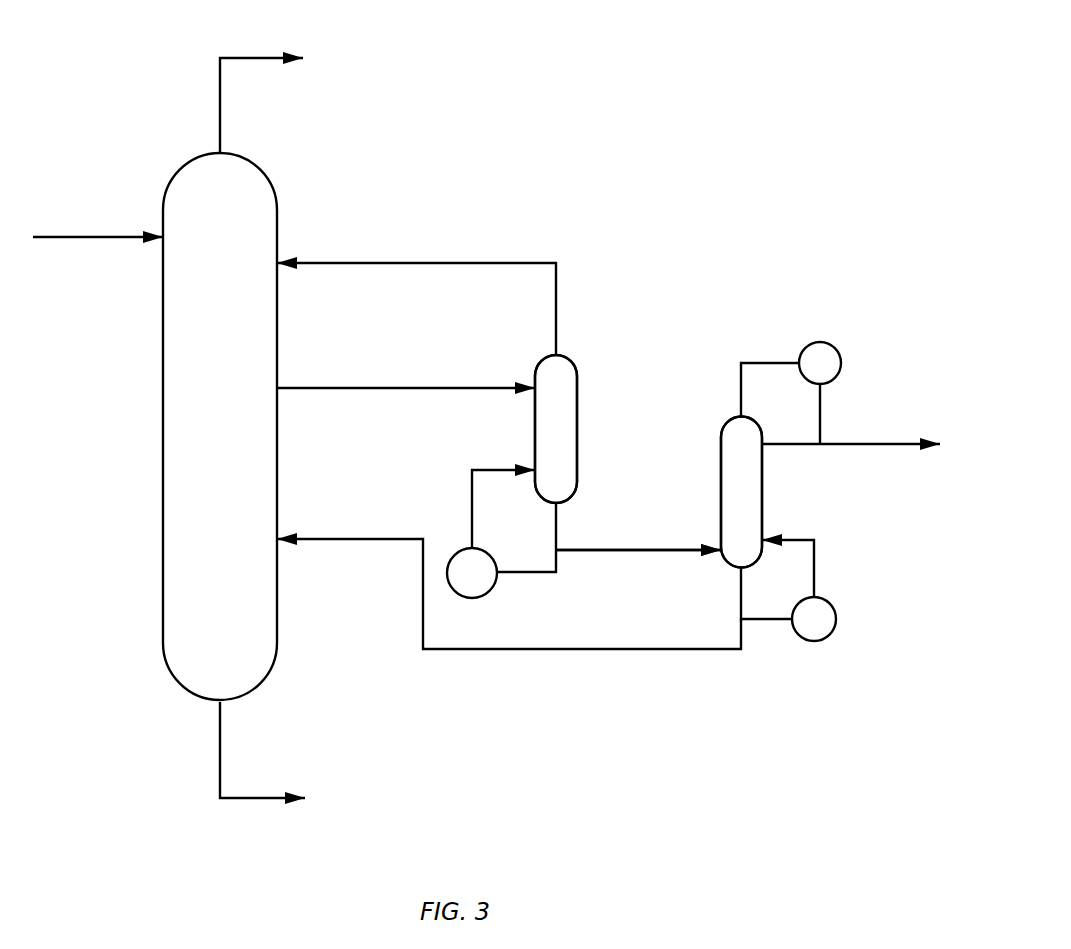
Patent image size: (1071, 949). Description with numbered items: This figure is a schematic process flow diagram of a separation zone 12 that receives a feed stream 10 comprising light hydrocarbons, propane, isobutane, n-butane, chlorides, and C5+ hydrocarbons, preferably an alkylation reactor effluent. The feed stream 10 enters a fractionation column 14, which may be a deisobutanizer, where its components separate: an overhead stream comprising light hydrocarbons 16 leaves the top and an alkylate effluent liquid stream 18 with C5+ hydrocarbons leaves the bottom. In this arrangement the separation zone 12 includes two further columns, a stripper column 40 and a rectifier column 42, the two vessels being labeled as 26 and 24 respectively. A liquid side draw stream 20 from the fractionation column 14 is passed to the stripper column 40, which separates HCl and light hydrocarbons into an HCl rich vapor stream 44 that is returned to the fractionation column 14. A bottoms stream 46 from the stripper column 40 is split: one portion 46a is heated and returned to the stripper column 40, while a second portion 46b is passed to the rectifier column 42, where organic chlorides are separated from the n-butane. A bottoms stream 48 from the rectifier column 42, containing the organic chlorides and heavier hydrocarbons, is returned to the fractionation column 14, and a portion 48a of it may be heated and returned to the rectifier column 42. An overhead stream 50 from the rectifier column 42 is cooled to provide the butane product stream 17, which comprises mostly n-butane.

The feed stream 10 is at (99, 237).
The separation zone 12 is at (604, 118).
The fractionation column 14 is at (265, 172).
The stream comprising light hydrocarbons 16 is at (263, 58).
The butane product stream 17 is at (887, 444).
The liquid stream 18 is at (220, 752).
The liquid side draw stream 20 is at (407, 388).
The second column 24 is at (718, 424).
The side stripper 26 is at (584, 352).
The stripper column 40 is at (577, 430).
The rectifier column 42 is at (721, 484).
The HCl rich vapor stream 44 is at (511, 263).
The bottoms stream 46 is at (556, 535).
The portion of bottoms stream 46a is at (518, 572).
The second portion of bottoms stream 46b is at (628, 551).
The bottoms stream 48 is at (700, 649).
The portion of bottoms stream 48a is at (768, 619).
The overhead stream 50 is at (771, 363).